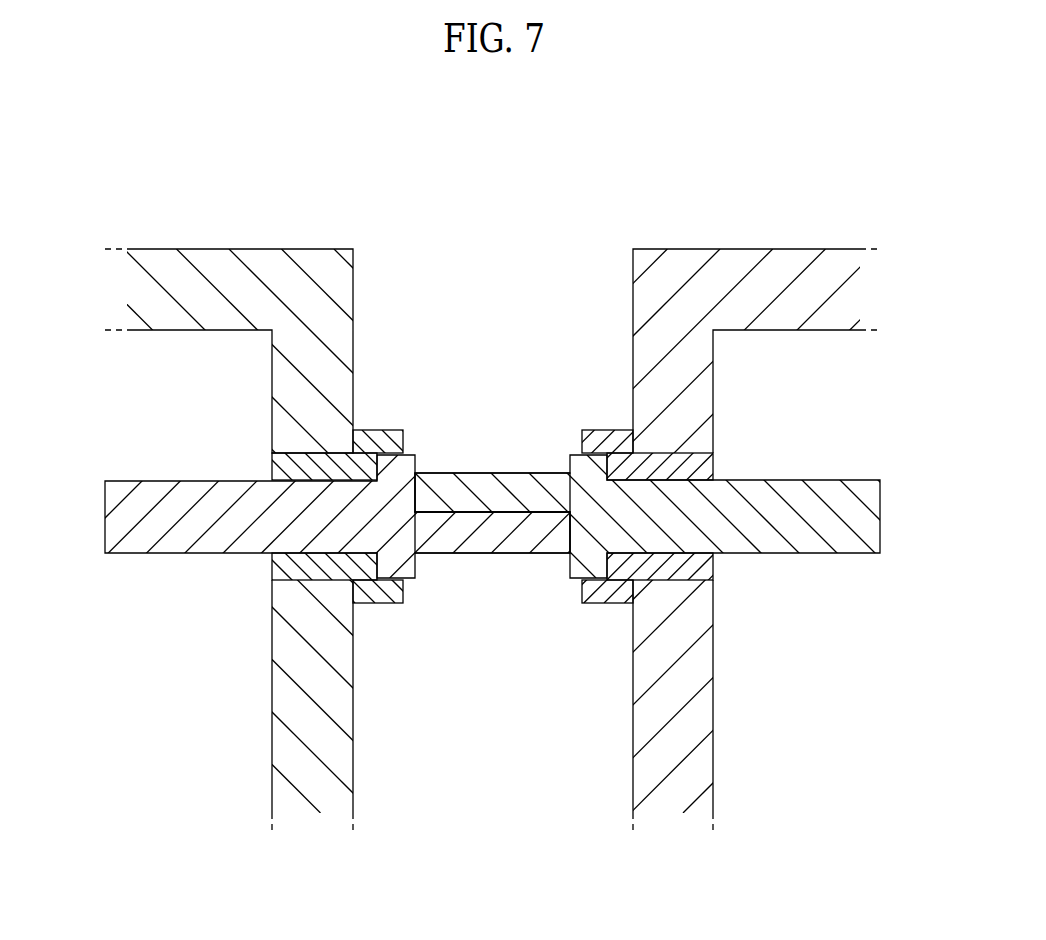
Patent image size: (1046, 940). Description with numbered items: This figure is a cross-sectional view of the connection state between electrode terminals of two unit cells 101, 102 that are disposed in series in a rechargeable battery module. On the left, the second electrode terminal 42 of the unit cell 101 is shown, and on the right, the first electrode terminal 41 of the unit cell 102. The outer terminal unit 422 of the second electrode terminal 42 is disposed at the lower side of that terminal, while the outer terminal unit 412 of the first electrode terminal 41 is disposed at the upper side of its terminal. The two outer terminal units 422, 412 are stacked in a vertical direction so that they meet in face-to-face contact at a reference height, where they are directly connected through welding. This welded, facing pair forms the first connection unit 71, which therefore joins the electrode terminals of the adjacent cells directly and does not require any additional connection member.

The unit cell 101 is at (215, 258).
The unit cell 102 is at (795, 256).
The first connection unit 71 is at (500, 324).
The first electrode terminal 41 is at (572, 408).
The second electrode terminal 42 is at (418, 408).
The outer terminal unit 412 is at (485, 480).
The outer terminal unit 422 is at (478, 544).